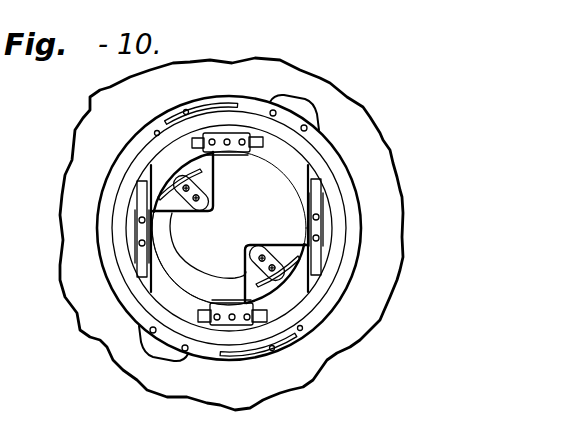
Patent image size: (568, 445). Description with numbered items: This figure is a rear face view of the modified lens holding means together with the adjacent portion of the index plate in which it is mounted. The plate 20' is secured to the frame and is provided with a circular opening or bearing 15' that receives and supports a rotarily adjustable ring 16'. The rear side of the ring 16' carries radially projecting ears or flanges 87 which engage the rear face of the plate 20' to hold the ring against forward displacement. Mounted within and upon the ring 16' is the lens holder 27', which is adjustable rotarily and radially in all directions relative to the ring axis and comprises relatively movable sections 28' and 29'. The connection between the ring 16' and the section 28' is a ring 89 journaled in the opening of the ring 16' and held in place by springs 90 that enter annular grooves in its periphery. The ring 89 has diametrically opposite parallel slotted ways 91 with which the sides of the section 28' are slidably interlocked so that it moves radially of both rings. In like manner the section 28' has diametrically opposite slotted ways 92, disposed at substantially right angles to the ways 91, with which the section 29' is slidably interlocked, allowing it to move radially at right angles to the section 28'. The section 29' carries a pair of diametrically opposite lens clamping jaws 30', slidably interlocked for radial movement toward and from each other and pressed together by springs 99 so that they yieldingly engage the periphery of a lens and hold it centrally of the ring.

The circular opening or bearing 15' is at (273, 228).
The rotarily adjustable ring 16' is at (267, 218).
The plate 20' is at (249, 234).
The lens holder 27' is at (206, 245).
The lens holding section 28' is at (229, 228).
The section 29' is at (229, 228).
The lens clamping jaws 30' is at (230, 227).
The radially projecting ears or flanges 87 is at (300, 107).
The ring 89 is at (140, 293).
The springs 90 is at (168, 128).
The slotted ways 91 is at (138, 192).
The slotted ways 92 is at (215, 155).
The springs 99 is at (176, 178).